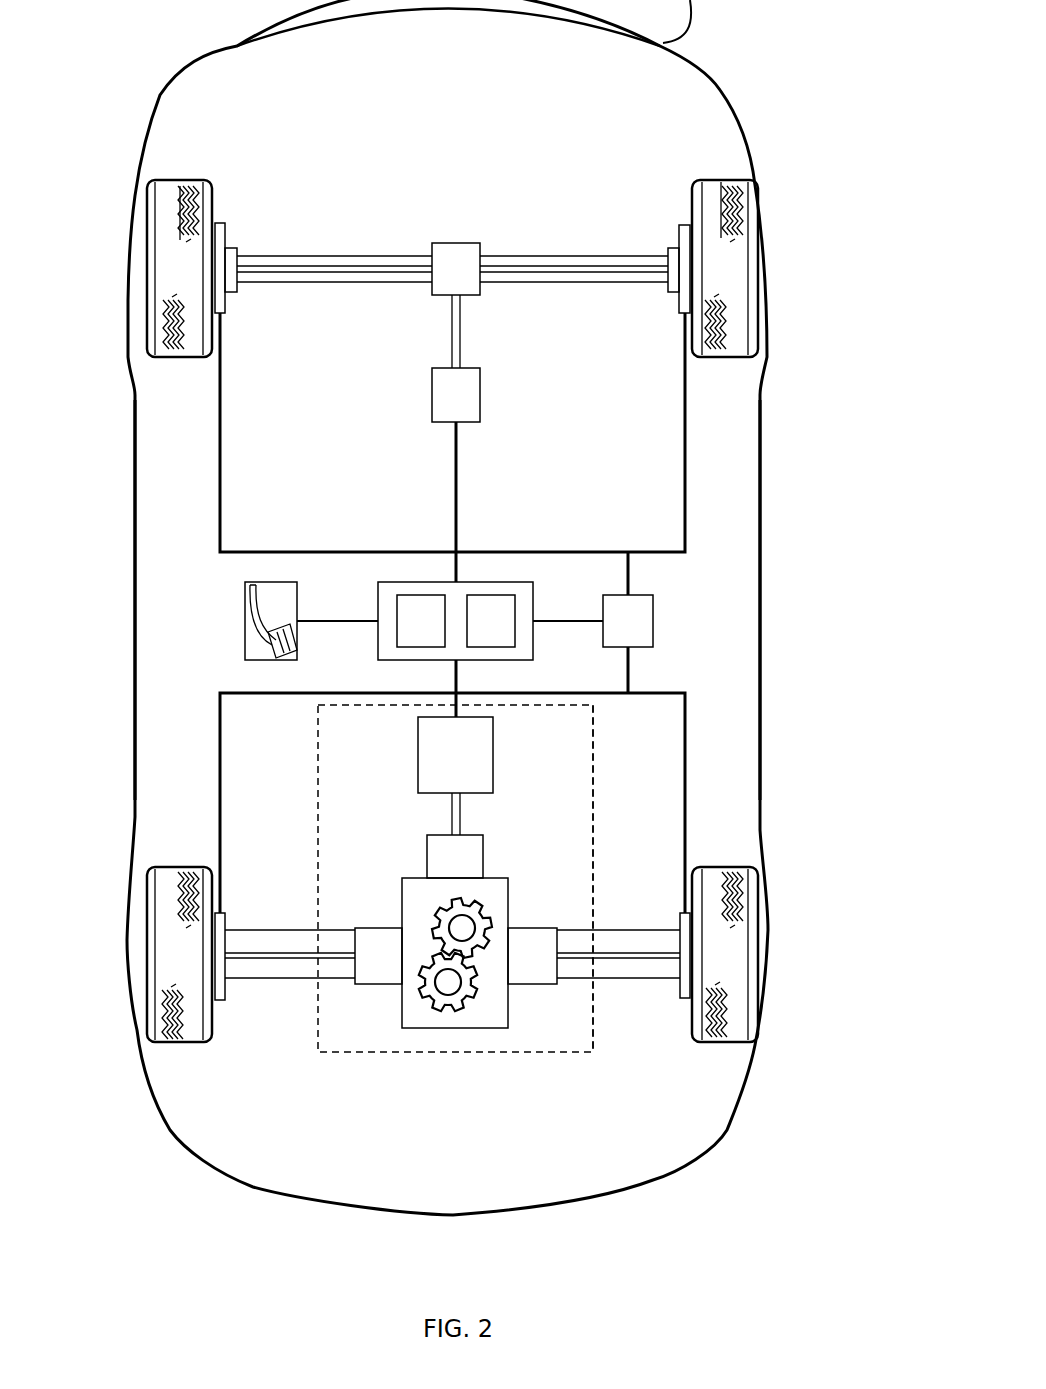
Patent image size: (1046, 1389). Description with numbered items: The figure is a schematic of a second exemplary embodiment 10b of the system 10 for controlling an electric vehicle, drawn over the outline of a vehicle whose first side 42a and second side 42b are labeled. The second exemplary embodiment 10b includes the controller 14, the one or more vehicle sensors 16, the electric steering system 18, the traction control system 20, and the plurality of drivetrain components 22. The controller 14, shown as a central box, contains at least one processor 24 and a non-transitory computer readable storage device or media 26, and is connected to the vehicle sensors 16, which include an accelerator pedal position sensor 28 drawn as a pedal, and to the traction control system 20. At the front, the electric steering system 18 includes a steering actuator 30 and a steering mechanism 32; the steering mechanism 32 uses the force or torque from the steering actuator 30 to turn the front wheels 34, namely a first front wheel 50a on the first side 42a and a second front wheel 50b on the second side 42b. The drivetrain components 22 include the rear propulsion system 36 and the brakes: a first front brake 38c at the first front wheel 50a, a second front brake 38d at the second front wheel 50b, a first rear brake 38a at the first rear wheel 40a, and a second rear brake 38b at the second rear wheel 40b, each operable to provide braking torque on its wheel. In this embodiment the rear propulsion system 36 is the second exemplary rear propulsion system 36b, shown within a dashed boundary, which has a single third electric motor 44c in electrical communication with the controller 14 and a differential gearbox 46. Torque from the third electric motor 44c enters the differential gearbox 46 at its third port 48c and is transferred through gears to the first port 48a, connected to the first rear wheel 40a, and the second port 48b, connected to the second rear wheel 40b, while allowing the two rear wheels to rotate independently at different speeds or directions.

The system for controlling an electric vehicle 10 is at (483, 1128).
The second exemplary embodiment 10b is at (460, 1070).
The controller 14 is at (445, 634).
The vehicle sensors 16 is at (275, 612).
The electric steering system 18 is at (498, 340).
The traction control system 20 is at (593, 622).
The drivetrain components 22 is at (228, 303).
The processor 24 is at (421, 621).
The non-transitory computer readable storage device or media 26 is at (491, 621).
The accelerator pedal position sensor 28 is at (246, 620).
The steering actuator 30 is at (456, 358).
The steering mechanism 32 is at (452, 269).
The front wheels 34 is at (180, 185).
The rear propulsion system 36 is at (318, 818).
The second exemplary rear propulsion system 36b is at (593, 798).
The first rear brake 38a is at (225, 923).
The second rear brake 38b is at (680, 923).
The first front brake 38c is at (221, 224).
The second front brake 38d is at (684, 225).
The first rear wheel 40a is at (163, 1042).
The second rear wheel 40b is at (732, 1043).
The first side 42a is at (127, 548).
The second side 42b is at (763, 533).
The third electric motor 44c is at (455, 755).
The differential gearbox 46 is at (470, 1028).
The first port 48a is at (313, 956).
The second port 48b is at (594, 956).
The third port 48c is at (455, 835).
The first front wheel 50a is at (164, 359).
The second front wheel 50b is at (700, 360).